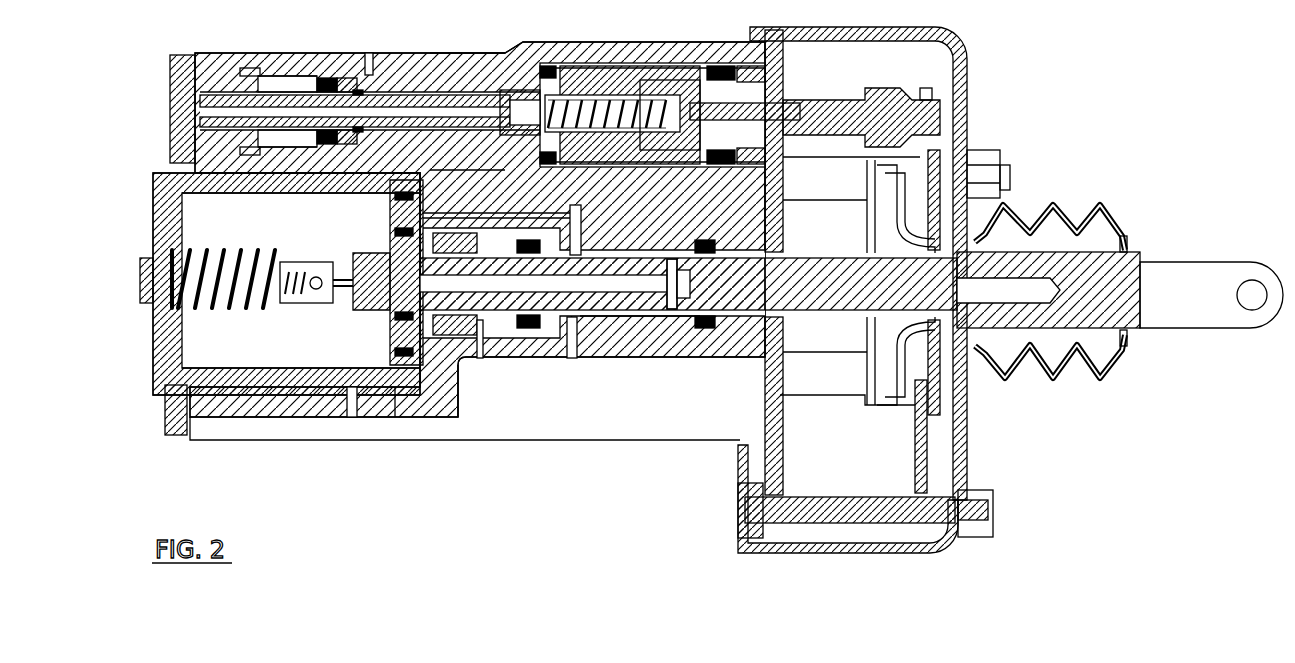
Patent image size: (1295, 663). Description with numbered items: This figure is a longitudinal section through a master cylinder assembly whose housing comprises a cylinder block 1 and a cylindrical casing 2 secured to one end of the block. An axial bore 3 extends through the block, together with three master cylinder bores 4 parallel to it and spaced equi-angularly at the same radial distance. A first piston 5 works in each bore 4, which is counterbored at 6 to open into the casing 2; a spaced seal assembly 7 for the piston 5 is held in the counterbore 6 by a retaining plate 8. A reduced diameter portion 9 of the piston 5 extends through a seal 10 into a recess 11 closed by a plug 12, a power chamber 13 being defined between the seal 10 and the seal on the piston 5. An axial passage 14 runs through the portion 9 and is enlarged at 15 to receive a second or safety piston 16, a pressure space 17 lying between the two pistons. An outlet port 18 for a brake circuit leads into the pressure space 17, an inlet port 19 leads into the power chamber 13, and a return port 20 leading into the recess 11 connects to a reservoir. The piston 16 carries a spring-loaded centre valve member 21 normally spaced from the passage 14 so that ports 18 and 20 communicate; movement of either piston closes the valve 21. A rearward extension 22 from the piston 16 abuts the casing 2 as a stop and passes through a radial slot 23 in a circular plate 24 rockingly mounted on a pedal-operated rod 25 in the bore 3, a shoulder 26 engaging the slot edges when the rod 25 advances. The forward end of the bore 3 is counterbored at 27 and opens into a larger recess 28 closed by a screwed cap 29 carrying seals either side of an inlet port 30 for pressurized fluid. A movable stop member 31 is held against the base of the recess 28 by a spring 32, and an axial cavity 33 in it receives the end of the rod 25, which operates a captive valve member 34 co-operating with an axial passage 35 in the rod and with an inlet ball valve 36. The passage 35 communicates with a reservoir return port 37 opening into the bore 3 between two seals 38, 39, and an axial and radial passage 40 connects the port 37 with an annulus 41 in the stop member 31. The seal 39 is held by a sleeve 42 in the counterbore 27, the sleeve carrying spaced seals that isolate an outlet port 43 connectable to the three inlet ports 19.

The cylinder block 1 is at (547, 455).
The cylindrical casing 2 is at (896, 562).
The axial bore 3 is at (570, 340).
The master cylinder bore 4 is at (455, 70).
The first piston 5 is at (478, 85).
The counterbore 6 is at (590, 72).
The spaced seal assembly 7 is at (740, 70).
The retaining plate 8 is at (775, 45).
The reduced diameter portion 9 is at (345, 78).
The seal 10 is at (325, 78).
The recess 11 is at (296, 85).
The plug 12 is at (190, 78).
The power chamber 13 is at (362, 88).
The axial passage 14 is at (222, 100).
The enlargement 15 is at (560, 90).
The second piston 16 is at (802, 108).
The pressure space 17 is at (705, 66).
The outlet port 18 is at (645, 52).
The inlet port 19 is at (378, 57).
The return port 20 is at (272, 62).
The centre valve member 21 is at (522, 92).
The rearward extension 22 is at (955, 112).
The radial slot 23 is at (923, 90).
The circular plate 24 is at (937, 148).
The pedal-operated rod 25 is at (843, 278).
The shoulder 26 is at (878, 97).
The counterbore 27 is at (525, 338).
The recess 28 is at (256, 229).
The screwed cap 29 is at (163, 395).
The inlet port 30 is at (352, 418).
The movable stop member 31 is at (396, 418).
The spring 32 is at (223, 298).
The axial cavity 33 is at (360, 312).
The captive valve member 34 is at (353, 258).
The axial passage 35 is at (672, 312).
The inlet ball valve 36 is at (314, 305).
The reservoir return port 37 is at (580, 330).
The seal 38 is at (706, 330).
The seal 39 is at (520, 340).
The axial and radial passage 40 is at (581, 233).
The annulus 41 is at (446, 420).
The sleeve 42 is at (455, 340).
The outlet port 43 is at (470, 345).